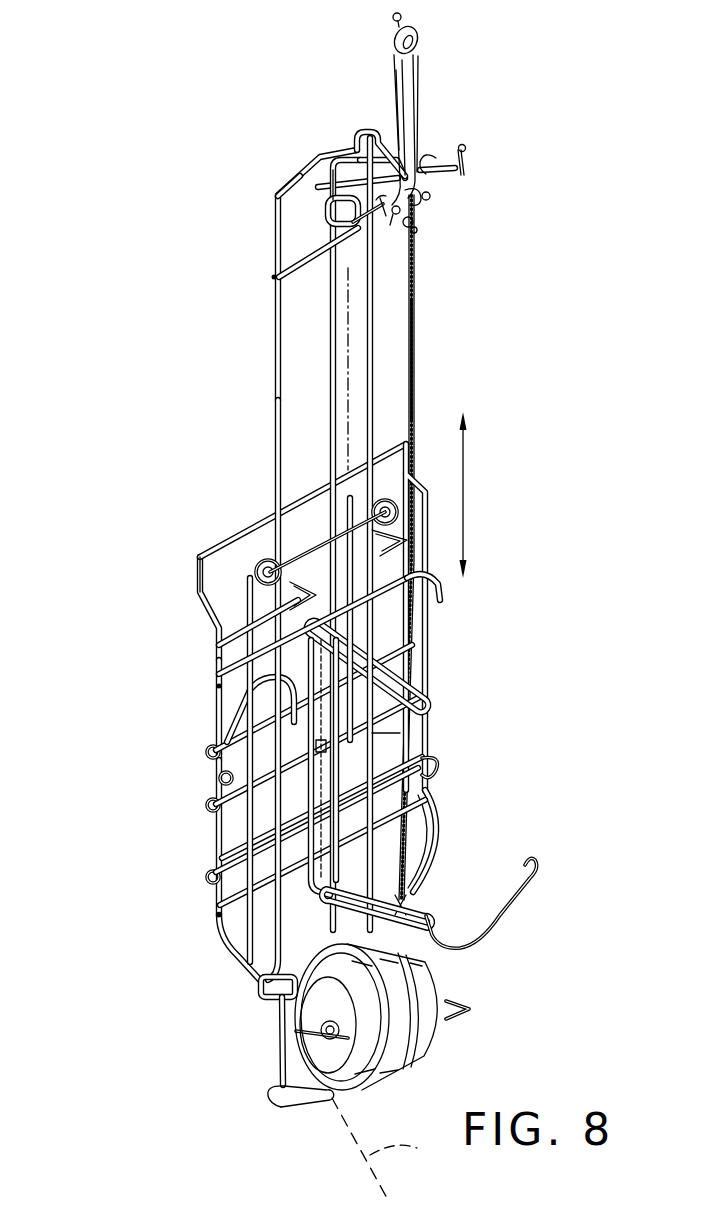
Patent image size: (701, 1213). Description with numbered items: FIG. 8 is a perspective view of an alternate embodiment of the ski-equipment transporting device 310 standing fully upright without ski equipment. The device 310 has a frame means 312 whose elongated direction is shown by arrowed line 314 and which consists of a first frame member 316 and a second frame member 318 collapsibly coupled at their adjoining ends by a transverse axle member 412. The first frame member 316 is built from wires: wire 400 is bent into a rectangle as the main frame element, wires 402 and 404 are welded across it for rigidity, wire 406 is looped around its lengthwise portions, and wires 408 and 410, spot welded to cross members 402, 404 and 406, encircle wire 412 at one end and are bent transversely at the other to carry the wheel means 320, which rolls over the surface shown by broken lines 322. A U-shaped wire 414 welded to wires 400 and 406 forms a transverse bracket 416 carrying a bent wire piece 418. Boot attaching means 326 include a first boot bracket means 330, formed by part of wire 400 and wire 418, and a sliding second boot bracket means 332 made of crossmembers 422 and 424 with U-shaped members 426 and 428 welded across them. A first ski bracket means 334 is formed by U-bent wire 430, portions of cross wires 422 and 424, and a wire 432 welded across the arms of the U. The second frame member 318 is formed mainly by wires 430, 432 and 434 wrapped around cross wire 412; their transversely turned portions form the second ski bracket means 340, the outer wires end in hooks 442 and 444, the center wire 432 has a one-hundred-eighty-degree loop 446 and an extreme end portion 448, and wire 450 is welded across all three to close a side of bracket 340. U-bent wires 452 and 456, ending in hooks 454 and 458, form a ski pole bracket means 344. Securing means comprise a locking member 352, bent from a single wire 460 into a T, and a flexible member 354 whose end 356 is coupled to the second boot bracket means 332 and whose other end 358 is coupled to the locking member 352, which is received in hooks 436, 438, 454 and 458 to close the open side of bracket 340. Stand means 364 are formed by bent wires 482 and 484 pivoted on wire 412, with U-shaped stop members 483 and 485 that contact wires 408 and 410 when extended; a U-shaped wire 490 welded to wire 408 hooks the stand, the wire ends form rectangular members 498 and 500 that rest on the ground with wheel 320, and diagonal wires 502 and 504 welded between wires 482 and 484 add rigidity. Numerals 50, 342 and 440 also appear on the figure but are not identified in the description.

The cable 50 is at (423, 340).
The device for transporting ski equipment 310 is at (192, 525).
The frame means 312 is at (339, 417).
The elongated direction 314 is at (466, 500).
The first frame member 316 is at (207, 720).
The second frame member 318 is at (268, 391).
The wheel means 320 is at (387, 1086).
The surface 322 is at (412, 1152).
The boot attaching means 326 is at (196, 833).
The first boot bracket means 330 is at (239, 979).
The second boot bracket means 332 is at (446, 619).
The first ski bracket means 334 is at (396, 678).
The second ski bracket means 340 is at (320, 106).
The pivot pin 342 is at (435, 201).
The ski pole bracket means 344 is at (283, 186).
The locking member 352 is at (428, 70).
The elongated flexible member 354 is at (415, 355).
The end of elongated flexible member 356 is at (436, 772).
The another end of elongated flexible member 358 is at (420, 228).
The stand means 364 is at (266, 1109).
The wire 400 is at (245, 550).
The wire 402 is at (216, 686).
The wire 404 is at (215, 913).
The wire 406 is at (208, 876).
The wire 408 is at (325, 905).
The wire 410 is at (440, 835).
The transverse axle member 412 is at (305, 556).
The wire 414 is at (428, 905).
The bracket 416 is at (437, 868).
The bent wire piece 418 is at (470, 945).
The crossmember 422 is at (208, 750).
The crossmember 424 is at (208, 807).
The U-shaped bent wire member 426 is at (220, 778).
The U-shaped bent wire member 428 is at (436, 601).
The wire 430 is at (276, 335).
The wire 432 is at (333, 332).
The wire 434 is at (371, 350).
The hook 436 is at (298, 175).
The hook 438 is at (343, 157).
The tube bend 440 is at (366, 132).
The hook 442 is at (395, 222).
The hook 444 is at (452, 187).
The 180 degree loop 446 is at (420, 47).
The extreme axial end portion 448 is at (393, 14).
The wire 450 is at (306, 270).
The wire 452 is at (335, 200).
The hook 454 is at (358, 225).
The second wire 456 is at (421, 150).
The hook 458 is at (462, 176).
The wire 460 is at (396, 80).
The bent wire 482 is at (240, 637).
The U shaped stop member 483 is at (256, 578).
The bent wire 484 is at (400, 735).
The U shaped stop member 485 is at (410, 472).
The U shaped wire 490 is at (262, 996).
The rectangular member 498 is at (265, 1088).
The rectangular member 500 is at (471, 1008).
The diagonal wire 502 is at (245, 660).
The diagonal wire 504 is at (232, 947).